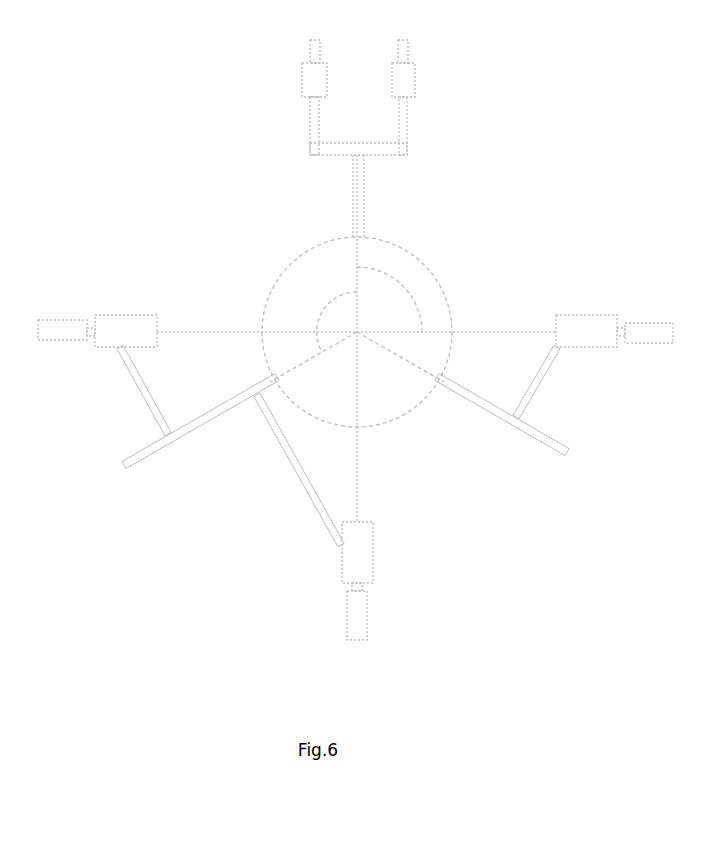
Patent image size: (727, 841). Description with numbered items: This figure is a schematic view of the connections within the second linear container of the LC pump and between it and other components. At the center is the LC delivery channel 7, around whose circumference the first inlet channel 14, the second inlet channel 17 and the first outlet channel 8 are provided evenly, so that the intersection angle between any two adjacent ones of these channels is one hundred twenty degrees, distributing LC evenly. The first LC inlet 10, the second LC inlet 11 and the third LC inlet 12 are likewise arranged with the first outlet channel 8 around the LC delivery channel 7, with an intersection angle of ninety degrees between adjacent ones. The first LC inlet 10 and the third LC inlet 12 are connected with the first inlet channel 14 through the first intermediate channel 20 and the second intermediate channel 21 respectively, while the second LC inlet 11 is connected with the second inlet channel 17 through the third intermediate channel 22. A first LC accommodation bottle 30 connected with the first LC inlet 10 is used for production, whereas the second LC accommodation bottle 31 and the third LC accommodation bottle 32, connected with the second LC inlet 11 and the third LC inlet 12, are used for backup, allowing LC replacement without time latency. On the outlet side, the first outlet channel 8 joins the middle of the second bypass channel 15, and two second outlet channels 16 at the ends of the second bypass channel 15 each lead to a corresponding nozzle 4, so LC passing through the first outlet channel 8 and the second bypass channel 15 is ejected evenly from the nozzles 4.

The nozzle 4 is at (302, 80).
The second outlet channel 16 is at (310, 135).
The second bypass channel 15 is at (337, 155).
The first outlet channel 8 is at (364, 193).
The LC delivery channel 7 is at (435, 268).
The first LC inlet 10 is at (127, 315).
The second LC inlet 11 is at (583, 315).
The third LC inlet 12 is at (373, 552).
The first LC accommodation bottle 30 is at (60, 340).
The second LC accommodation bottle 31 is at (655, 337).
The third LC accommodation bottle 32 is at (358, 642).
The first intermediate channel 20 is at (123, 363).
The second intermediate channel 21 is at (300, 482).
The third intermediate channel 22 is at (548, 372).
The first inlet channel 14 is at (193, 428).
The second inlet channel 17 is at (530, 437).